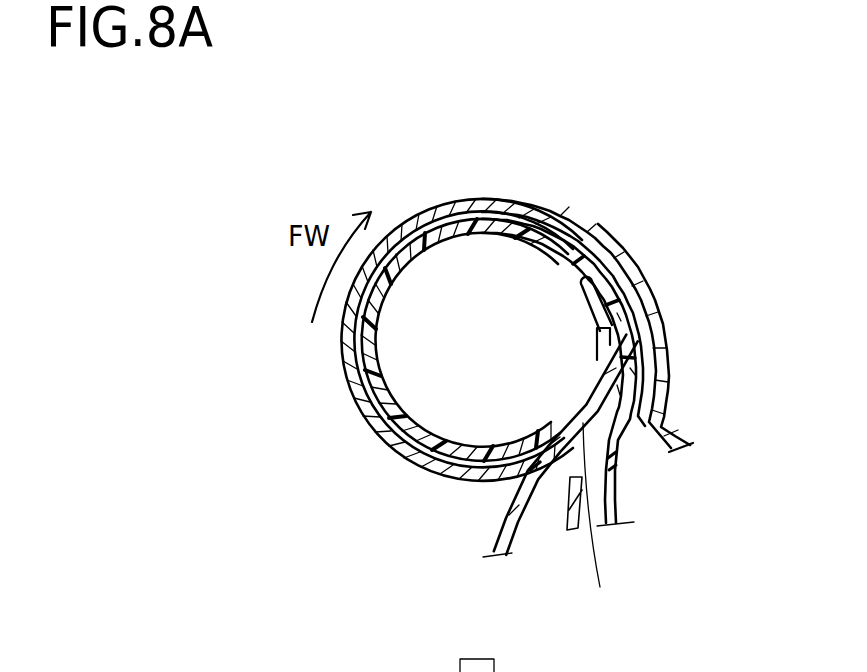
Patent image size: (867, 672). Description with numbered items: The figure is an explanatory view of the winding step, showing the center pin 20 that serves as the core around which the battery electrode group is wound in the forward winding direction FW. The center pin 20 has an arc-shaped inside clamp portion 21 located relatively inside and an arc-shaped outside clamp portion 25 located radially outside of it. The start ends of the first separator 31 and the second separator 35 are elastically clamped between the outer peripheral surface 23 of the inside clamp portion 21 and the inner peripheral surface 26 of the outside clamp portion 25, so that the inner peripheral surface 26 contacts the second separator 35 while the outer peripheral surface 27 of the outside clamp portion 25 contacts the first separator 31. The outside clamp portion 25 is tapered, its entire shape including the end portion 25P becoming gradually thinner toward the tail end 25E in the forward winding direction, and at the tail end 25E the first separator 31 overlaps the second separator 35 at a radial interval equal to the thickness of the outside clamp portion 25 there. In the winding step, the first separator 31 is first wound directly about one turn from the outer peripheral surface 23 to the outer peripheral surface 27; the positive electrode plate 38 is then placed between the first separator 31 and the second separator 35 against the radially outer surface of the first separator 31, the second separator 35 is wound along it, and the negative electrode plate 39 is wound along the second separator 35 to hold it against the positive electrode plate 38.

The center pin 20 is at (468, 225).
The inside clamp portion 21 is at (593, 383).
The outer peripheral surface of the inside clamp portion 23 is at (597, 337).
The outside clamp portion 25 is at (619, 387).
The tail end of the outside clamp portion 25E is at (600, 523).
The end portion of the outside clamp portion 25P is at (620, 406).
The inner peripheral surface of the outside clamp portion 26 is at (618, 313).
The outer peripheral surface of the outside clamp portion 27 is at (633, 368).
The first separator 31 is at (612, 424).
The second separator 35 is at (500, 530).
The positive electrode plate 38 is at (656, 328).
The negative electrode plate 39 is at (572, 505).